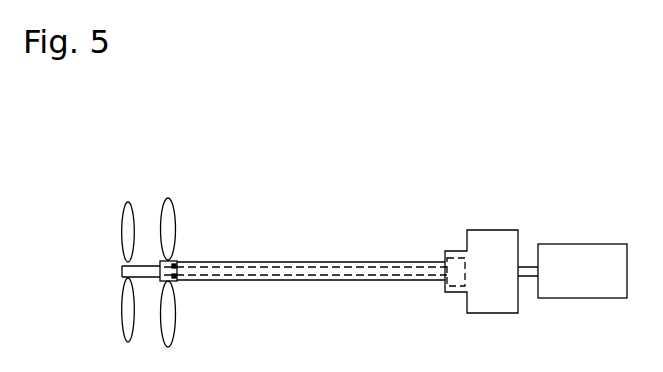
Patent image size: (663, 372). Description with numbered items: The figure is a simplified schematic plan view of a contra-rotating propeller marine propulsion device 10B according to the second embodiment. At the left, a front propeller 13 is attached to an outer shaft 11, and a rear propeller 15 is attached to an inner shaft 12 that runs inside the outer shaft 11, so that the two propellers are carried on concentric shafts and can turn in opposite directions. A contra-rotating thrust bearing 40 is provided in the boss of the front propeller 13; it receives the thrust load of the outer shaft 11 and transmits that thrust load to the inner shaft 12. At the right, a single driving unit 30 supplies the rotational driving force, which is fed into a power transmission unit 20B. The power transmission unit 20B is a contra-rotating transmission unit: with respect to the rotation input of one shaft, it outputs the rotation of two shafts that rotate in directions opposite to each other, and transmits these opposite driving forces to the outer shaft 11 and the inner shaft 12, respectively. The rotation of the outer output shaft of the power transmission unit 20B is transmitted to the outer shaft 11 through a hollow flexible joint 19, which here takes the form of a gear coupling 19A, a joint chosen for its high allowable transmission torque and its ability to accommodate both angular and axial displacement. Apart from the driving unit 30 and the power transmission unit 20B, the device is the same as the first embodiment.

The contra-rotating propeller marine propulsion device 10B is at (297, 185).
The rear propeller 15 is at (130, 203).
The front propeller 13 is at (175, 202).
The contra-rotating thrust bearing 40 is at (177, 262).
The outer shaft 11 is at (348, 262).
The inner shaft 12 is at (328, 272).
The flexible joint 19 is at (448, 258).
The gear coupling 19A is at (456, 272).
The power transmission unit 20B is at (492, 230).
The driving unit 30 is at (575, 252).